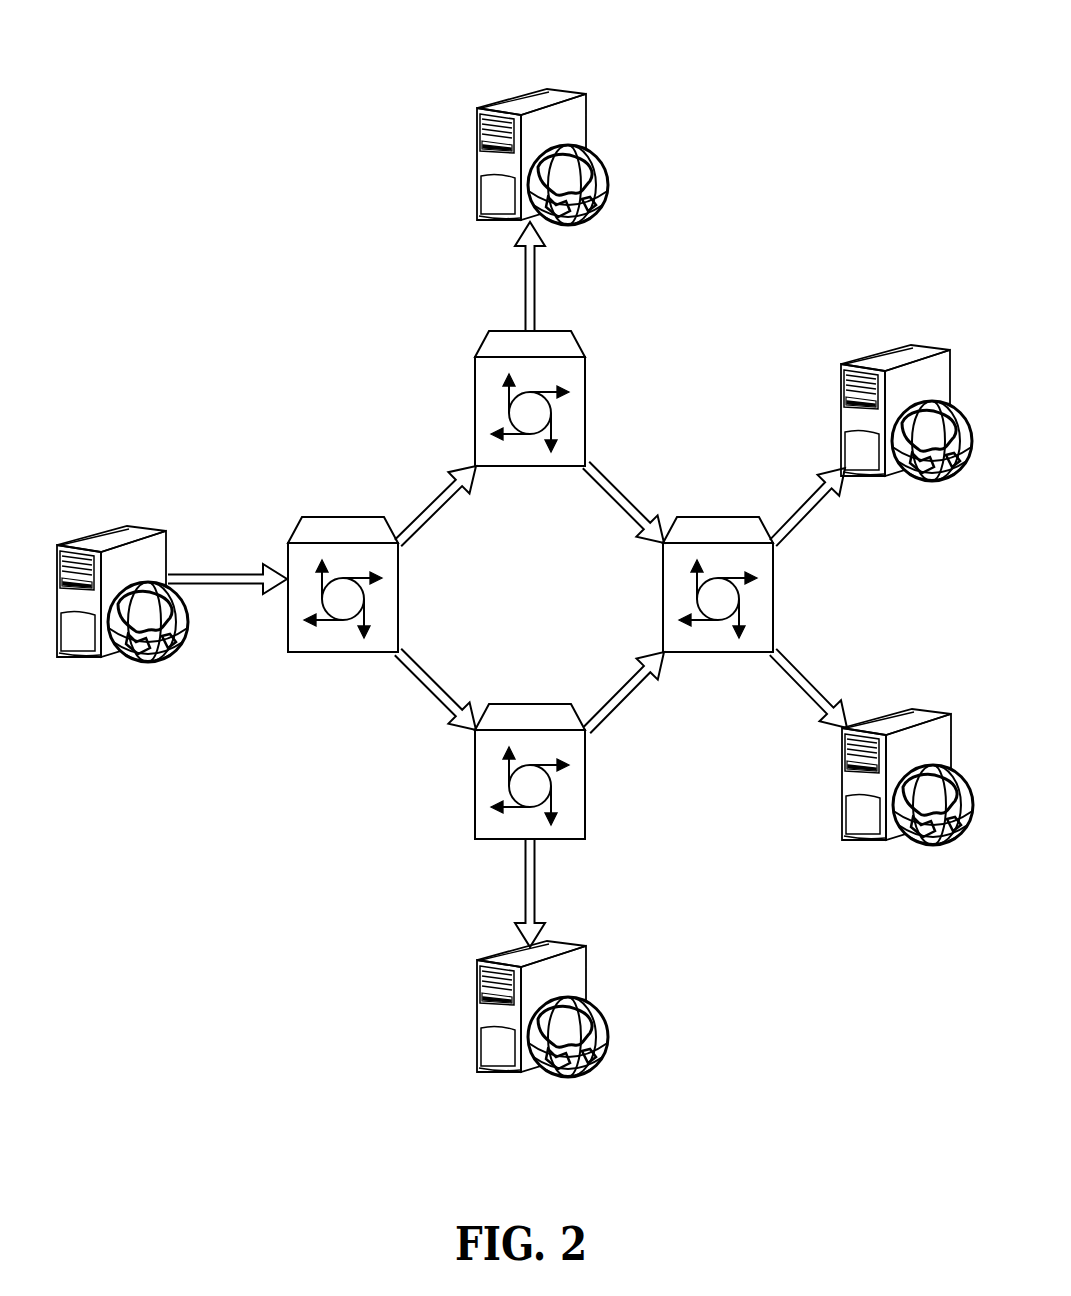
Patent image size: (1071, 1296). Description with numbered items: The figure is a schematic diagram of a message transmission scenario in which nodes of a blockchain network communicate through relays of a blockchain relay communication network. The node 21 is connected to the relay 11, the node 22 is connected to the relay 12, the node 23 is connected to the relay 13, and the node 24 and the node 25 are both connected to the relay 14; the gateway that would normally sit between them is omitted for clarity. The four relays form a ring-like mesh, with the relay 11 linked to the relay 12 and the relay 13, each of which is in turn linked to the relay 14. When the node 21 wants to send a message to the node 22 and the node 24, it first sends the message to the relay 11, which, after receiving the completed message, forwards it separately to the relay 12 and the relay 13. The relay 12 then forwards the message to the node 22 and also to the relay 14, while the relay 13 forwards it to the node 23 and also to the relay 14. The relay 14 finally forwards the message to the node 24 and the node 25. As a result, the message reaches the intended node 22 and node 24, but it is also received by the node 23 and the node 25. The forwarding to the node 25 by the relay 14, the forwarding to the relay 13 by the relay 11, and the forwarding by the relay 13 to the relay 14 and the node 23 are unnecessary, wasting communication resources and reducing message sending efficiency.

The relay 11 is at (342, 523).
The relay 12 is at (563, 335).
The relay 13 is at (528, 710).
The relay 14 is at (715, 522).
The node 21 is at (140, 532).
The node 22 is at (560, 98).
The node 23 is at (583, 972).
The node 24 is at (918, 350).
The node 25 is at (918, 715).